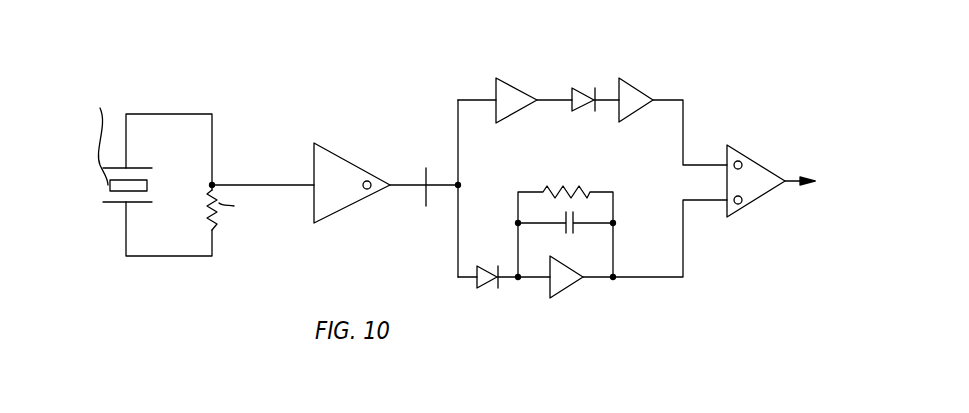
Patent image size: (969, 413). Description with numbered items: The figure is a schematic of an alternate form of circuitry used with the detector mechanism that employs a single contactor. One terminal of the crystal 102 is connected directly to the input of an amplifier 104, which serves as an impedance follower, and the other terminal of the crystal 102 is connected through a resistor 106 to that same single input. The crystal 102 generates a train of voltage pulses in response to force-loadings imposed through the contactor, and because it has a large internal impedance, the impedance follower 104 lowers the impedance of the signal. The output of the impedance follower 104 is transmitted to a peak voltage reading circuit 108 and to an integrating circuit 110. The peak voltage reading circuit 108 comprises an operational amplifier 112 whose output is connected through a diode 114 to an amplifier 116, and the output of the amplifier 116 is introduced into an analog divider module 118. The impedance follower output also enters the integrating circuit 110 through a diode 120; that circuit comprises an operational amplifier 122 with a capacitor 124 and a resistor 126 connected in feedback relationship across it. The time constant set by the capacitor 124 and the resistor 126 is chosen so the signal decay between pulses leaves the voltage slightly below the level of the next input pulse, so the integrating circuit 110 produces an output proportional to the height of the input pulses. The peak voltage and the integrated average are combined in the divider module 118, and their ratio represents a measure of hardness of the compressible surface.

The crystal 102 is at (100, 193).
The amplifier 104 is at (332, 162).
The resistor 106 is at (218, 222).
The peak voltage reading circuit 108 is at (467, 100).
The integrating circuit 110 is at (600, 283).
The operational amplifier 112 is at (517, 113).
The diode 114 is at (572, 83).
The amplifier 116 is at (635, 110).
The analog divider module 118 is at (750, 168).
The diode 120 is at (488, 262).
The operational amplifier 122 is at (565, 290).
The capacitor 124 is at (587, 238).
The resistor 126 is at (565, 189).